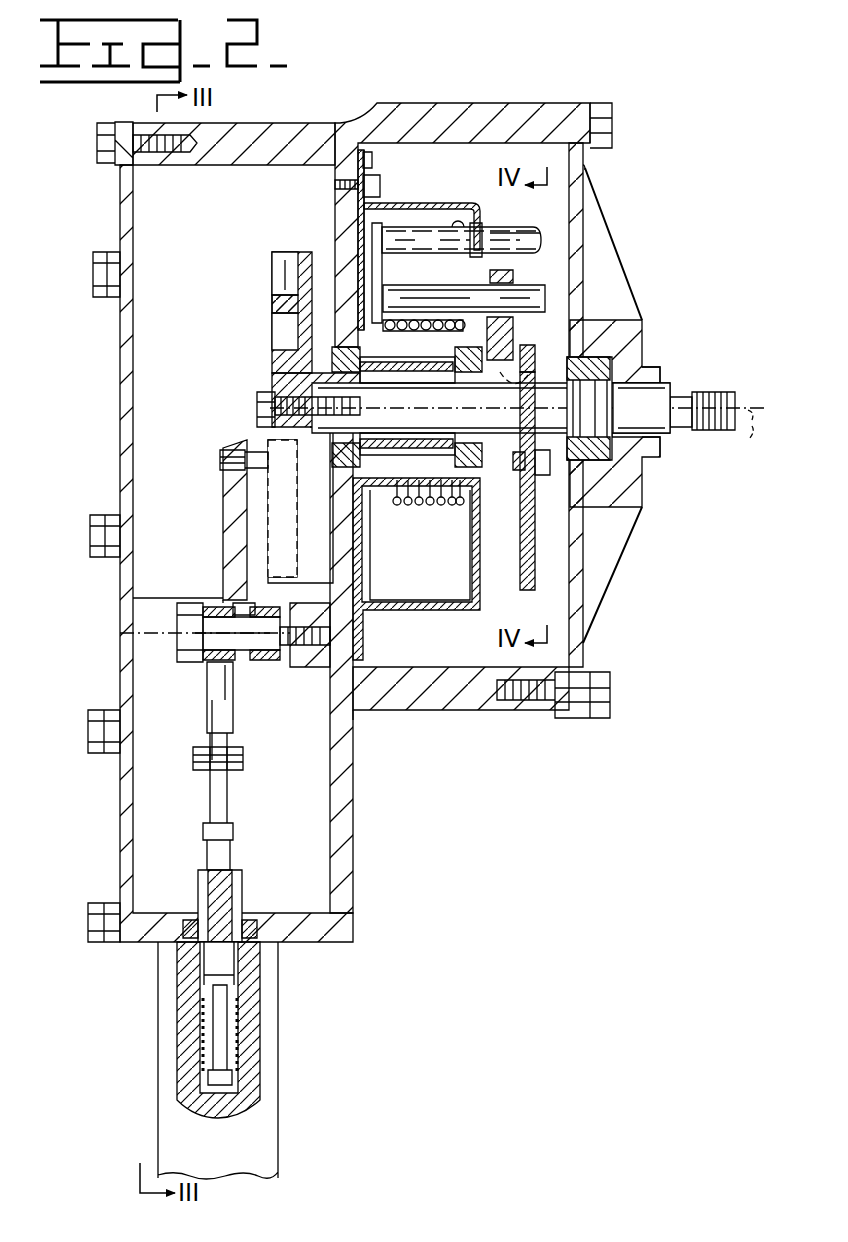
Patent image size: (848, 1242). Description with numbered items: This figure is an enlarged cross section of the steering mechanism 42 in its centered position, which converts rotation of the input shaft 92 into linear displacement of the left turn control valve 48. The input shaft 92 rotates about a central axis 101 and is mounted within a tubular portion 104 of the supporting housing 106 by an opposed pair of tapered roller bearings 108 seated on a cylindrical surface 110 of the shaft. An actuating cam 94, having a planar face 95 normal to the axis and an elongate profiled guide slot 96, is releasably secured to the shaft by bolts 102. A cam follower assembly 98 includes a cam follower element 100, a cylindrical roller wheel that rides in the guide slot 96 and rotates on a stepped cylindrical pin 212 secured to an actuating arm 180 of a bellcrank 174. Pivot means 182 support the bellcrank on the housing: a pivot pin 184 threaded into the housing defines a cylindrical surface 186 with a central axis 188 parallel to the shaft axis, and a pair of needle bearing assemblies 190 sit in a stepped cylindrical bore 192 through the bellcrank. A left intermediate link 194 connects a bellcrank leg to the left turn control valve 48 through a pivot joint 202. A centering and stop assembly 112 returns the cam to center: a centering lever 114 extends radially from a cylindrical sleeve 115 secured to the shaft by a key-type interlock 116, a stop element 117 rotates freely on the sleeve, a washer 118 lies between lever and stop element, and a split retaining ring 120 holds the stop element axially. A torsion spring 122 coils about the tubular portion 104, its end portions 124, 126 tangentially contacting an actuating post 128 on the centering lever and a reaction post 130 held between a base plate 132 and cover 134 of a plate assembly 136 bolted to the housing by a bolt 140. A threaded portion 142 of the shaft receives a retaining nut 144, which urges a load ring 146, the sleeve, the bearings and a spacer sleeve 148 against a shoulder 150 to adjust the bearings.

The steering mechanism 42 is at (607, 178).
The left turn control valve 48 is at (175, 1052).
The input shaft 92 is at (715, 390).
The actuating cam 94 is at (290, 245).
The planar face 95 is at (272, 302).
The guide slot 96 is at (280, 285).
The cam follower assembly 98 is at (200, 680).
The cam follower element 100 is at (280, 416).
The central axis 101 is at (748, 436).
The bolt 102 is at (260, 398).
The tubular portion 104 is at (385, 480).
The supporting housing 106 is at (458, 712).
The tapered roller bearings 108 is at (460, 437).
The cylindrical surface 110 is at (430, 392).
The centering and stop assembly 112 is at (497, 228).
The centering lever 114 is at (514, 273).
The cylindrical sleeve 115 is at (540, 370).
The key-type interlock 116 is at (528, 392).
The stop element 117 is at (540, 585).
The washer 118 is at (513, 462).
The split retaining ring 120 is at (540, 470).
The torsion spring 122 is at (458, 512).
The end portion of torsion spring 124 is at (415, 273).
The end portion of torsion spring 126 is at (463, 225).
The actuating post 128 is at (535, 298).
The reaction post 130 is at (540, 237).
The base plate 132 is at (335, 182).
The cover 134 is at (372, 158).
The plate assembly 136 is at (400, 183).
The bolt 140 is at (358, 190).
The threaded portion 142 is at (600, 385).
The retaining nut 144 is at (605, 345).
The load ring 146 is at (572, 455).
The spacer sleeve 148 is at (415, 375).
The shoulder 150 is at (330, 362).
The bellcrank 174 is at (222, 497).
The actuating arm 180 is at (236, 535).
The pivot means 182 is at (180, 624).
The pivot pin 184 is at (190, 665).
The cylindrical surface 186 is at (268, 650).
The central axis 188 is at (163, 640).
The needle bearing assemblies 190 is at (232, 670).
The stepped cylindrical bore 192 is at (250, 600).
The left intermediate link 194 is at (232, 715).
The pivot joint 202 is at (243, 765).
The stepped cylindrical pin 212 is at (218, 460).